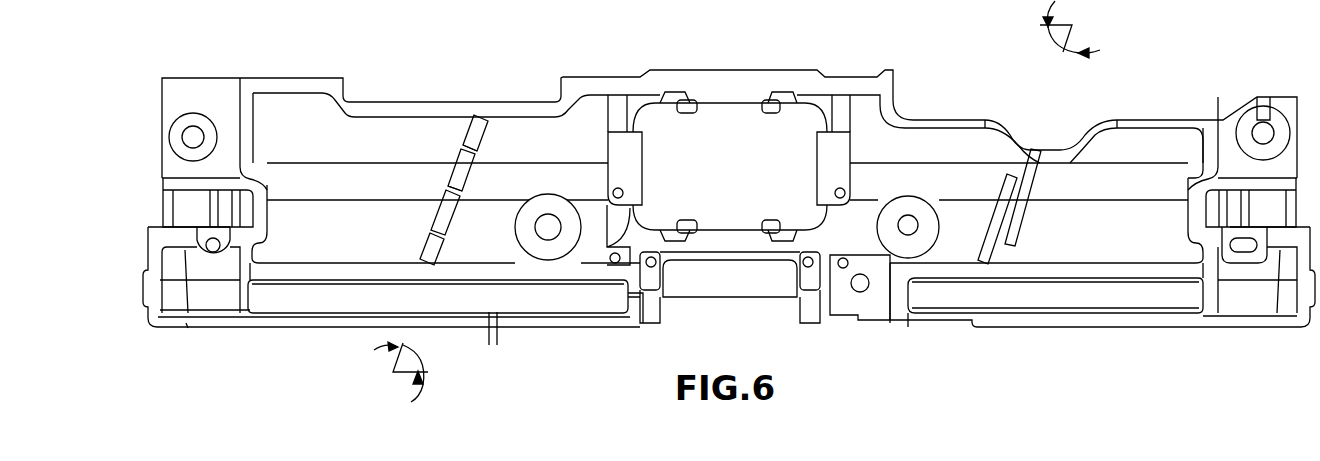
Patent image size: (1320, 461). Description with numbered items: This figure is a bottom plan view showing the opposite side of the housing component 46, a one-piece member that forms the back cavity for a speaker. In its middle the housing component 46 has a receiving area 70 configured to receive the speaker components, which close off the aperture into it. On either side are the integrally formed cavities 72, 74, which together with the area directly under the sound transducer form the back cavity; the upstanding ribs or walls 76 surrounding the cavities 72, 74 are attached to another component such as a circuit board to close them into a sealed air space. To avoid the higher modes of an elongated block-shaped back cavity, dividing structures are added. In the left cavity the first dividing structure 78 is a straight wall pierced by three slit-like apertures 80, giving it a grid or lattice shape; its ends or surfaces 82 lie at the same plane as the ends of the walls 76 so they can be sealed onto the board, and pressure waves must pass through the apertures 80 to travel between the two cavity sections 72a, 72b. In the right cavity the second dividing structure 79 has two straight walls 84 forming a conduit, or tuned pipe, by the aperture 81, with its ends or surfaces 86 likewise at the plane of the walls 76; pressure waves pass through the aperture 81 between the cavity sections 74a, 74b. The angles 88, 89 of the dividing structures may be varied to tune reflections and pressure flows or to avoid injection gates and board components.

The housing component 46 is at (898, 80).
The receiving area 70 is at (723, 125).
The first cavity 72 is at (378, 132).
The cavity section 72a is at (515, 250).
The cavity section 72b is at (303, 248).
The second cavity 74 is at (1133, 155).
The cavity section 74a is at (950, 252).
The cavity section 74b is at (1147, 238).
The upstanding ribs or walls 76 is at (285, 88).
The first dividing structure 78 is at (492, 343).
The second dividing structure 79 is at (1040, 200).
The apertures 80 is at (492, 341).
The aperture 81 is at (980, 263).
The ends or surfaces 82 is at (468, 160).
The straight walls 84 is at (968, 270).
The ends or surfaces 86 is at (992, 230).
The angle 88 is at (412, 358).
The angle 89 is at (1047, 42).